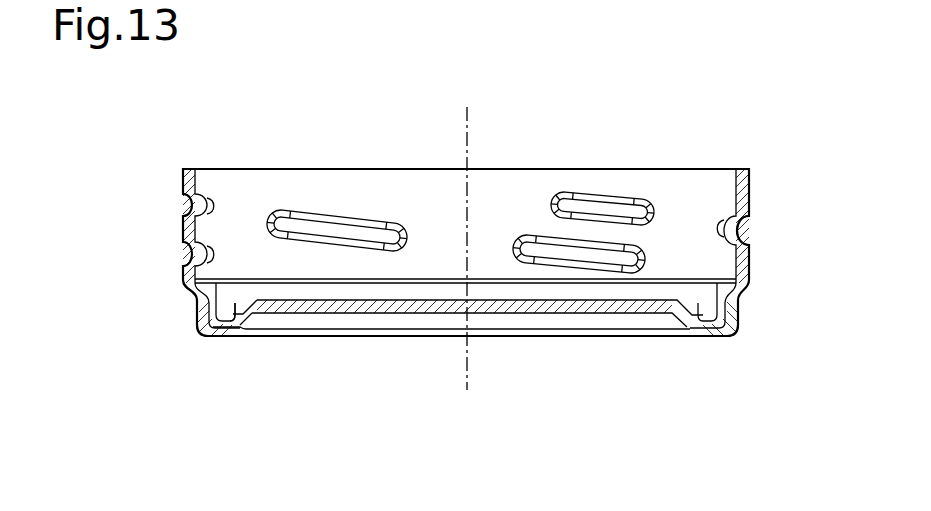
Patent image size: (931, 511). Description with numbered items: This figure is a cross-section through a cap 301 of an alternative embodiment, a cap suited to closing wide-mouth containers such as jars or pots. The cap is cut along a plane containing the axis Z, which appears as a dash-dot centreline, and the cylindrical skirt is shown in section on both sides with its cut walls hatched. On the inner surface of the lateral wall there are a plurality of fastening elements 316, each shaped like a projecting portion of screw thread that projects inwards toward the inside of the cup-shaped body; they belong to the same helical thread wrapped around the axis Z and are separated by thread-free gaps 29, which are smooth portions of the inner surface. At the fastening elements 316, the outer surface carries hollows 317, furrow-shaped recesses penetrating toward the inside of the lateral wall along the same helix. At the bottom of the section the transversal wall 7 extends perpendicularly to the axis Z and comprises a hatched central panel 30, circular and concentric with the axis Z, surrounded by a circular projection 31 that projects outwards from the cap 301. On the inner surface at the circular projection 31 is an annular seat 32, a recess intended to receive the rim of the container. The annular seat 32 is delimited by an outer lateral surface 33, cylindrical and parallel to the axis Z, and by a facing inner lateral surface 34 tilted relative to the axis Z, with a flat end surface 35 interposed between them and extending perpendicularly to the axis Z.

The cap 301 is at (786, 179).
The thread-free gap 29 is at (263, 200).
The fastening element 316 is at (333, 230).
The hollow 317 is at (188, 208).
The inner lateral surface 34 is at (242, 312).
The annular seat 32 is at (698, 296).
The central panel 30 is at (413, 314).
The transversal wall 7 is at (302, 352).
The circular projection 31 is at (221, 352).
The outer lateral surface 33 is at (708, 305).
The end surface 35 is at (230, 320).
The axis Z is at (465, 127).